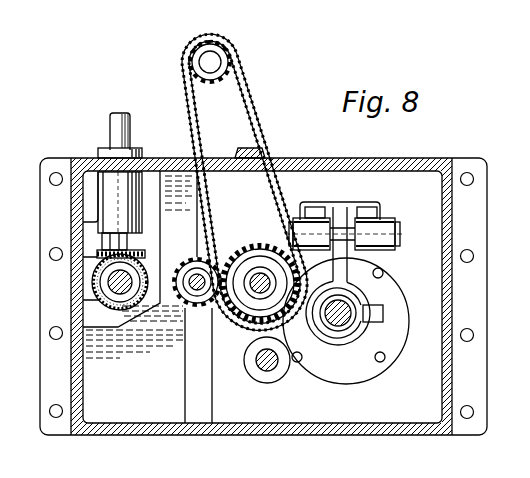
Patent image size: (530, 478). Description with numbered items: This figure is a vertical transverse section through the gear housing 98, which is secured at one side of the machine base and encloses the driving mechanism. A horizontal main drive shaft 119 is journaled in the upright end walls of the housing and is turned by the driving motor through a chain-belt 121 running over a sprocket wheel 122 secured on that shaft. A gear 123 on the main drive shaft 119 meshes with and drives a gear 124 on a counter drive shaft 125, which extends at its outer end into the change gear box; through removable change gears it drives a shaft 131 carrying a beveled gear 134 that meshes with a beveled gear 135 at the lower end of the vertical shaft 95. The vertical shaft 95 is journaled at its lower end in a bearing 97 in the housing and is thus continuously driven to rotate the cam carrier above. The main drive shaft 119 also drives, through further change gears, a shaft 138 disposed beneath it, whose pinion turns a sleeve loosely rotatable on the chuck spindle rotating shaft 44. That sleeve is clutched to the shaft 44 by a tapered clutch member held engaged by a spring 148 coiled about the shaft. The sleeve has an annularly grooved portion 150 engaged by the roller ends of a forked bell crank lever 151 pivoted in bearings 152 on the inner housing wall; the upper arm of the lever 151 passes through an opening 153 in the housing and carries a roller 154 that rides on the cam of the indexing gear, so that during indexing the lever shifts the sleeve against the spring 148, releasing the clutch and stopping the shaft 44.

The chuck spindle rotating shaft 44 is at (354, 326).
The vertical shaft 95 is at (120, 129).
The bearing 97 is at (155, 158).
The gear housing 98 is at (352, 153).
The main drive shaft 119 is at (236, 311).
The chain-belt 121 is at (263, 108).
The sprocket wheel 122 is at (243, 254).
The gear 123 is at (266, 240).
The gear 124 is at (196, 314).
The counter drive shaft 125 is at (195, 270).
The shaft 131 is at (110, 300).
The beveled gear 134 is at (95, 283).
The beveled gear 135 is at (100, 258).
The shaft 138 is at (262, 368).
The spring 148 is at (348, 333).
The annularly grooved portion 150 is at (362, 302).
The forked bell crank lever 151 is at (348, 250).
The bearings 152 is at (391, 222).
The opening 153 is at (366, 208).
The roller 154 is at (307, 203).